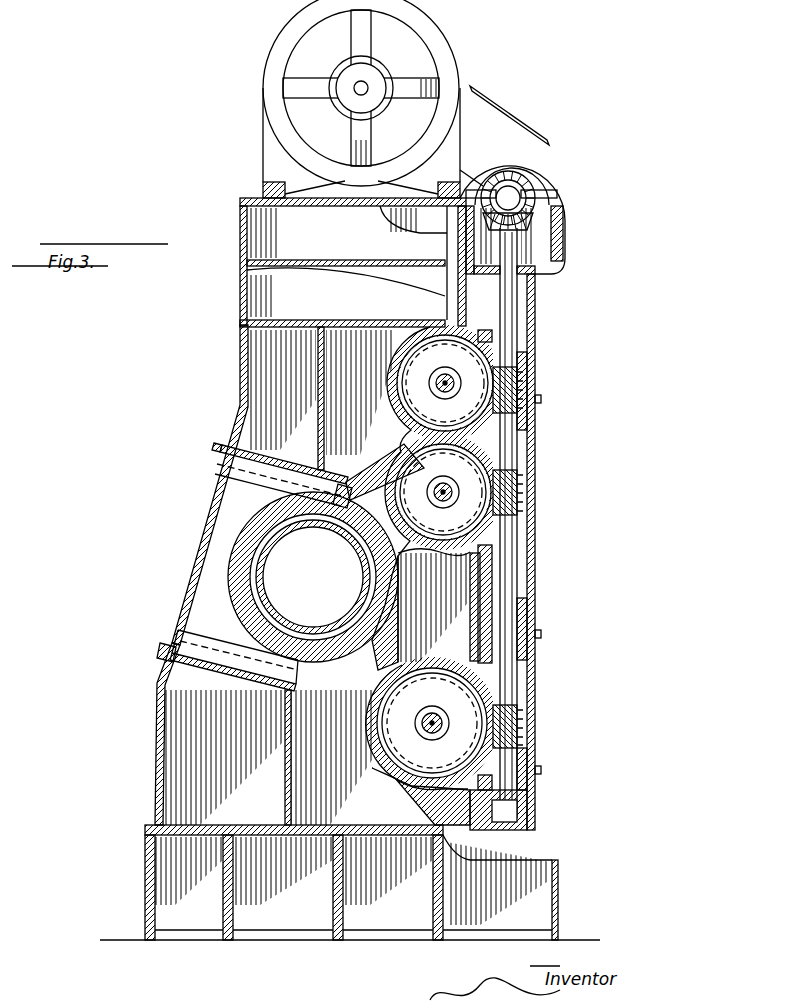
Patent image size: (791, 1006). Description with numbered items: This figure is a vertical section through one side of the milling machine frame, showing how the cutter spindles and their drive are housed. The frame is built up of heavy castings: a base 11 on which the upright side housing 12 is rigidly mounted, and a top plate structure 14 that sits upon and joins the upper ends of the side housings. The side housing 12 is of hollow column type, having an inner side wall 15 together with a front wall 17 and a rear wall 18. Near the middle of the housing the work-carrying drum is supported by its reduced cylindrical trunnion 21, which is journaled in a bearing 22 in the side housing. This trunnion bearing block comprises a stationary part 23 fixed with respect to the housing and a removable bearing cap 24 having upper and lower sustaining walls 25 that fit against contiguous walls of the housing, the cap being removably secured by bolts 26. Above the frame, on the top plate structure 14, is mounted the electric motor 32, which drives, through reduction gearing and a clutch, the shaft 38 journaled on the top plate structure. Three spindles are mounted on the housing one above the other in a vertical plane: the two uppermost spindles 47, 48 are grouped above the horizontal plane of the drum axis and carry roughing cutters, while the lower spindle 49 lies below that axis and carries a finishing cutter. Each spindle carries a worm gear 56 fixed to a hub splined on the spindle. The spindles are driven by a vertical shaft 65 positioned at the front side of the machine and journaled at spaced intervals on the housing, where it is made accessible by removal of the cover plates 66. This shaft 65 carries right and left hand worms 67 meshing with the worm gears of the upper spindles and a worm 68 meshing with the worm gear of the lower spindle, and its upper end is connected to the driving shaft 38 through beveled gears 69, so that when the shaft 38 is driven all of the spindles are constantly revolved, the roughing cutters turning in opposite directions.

The base 11 is at (147, 872).
The side housing 12 is at (158, 702).
The top plate structure 14 is at (243, 204).
The inner side wall 15 is at (268, 757).
The front wall 17 is at (476, 614).
The rear wall 18 is at (238, 379).
The trunnion 21 is at (267, 553).
The bearing 22 is at (258, 546).
The stationary part 23 is at (370, 618).
The bearing cap 24 is at (250, 521).
The sustaining wall 25 is at (236, 465).
The bolt 26 is at (248, 656).
The electric motor 32 is at (432, 38).
The shaft 38 is at (512, 196).
The upper spindle 47 is at (447, 384).
The upper spindle 48 is at (446, 490).
The lower spindle 49 is at (436, 724).
The worm gear 56 is at (487, 414).
The vertical shaft 65 is at (512, 548).
The cover plate 66 is at (535, 415).
The worm 67 is at (515, 388).
The worm 68 is at (518, 722).
The beveled gear 69 is at (530, 210).